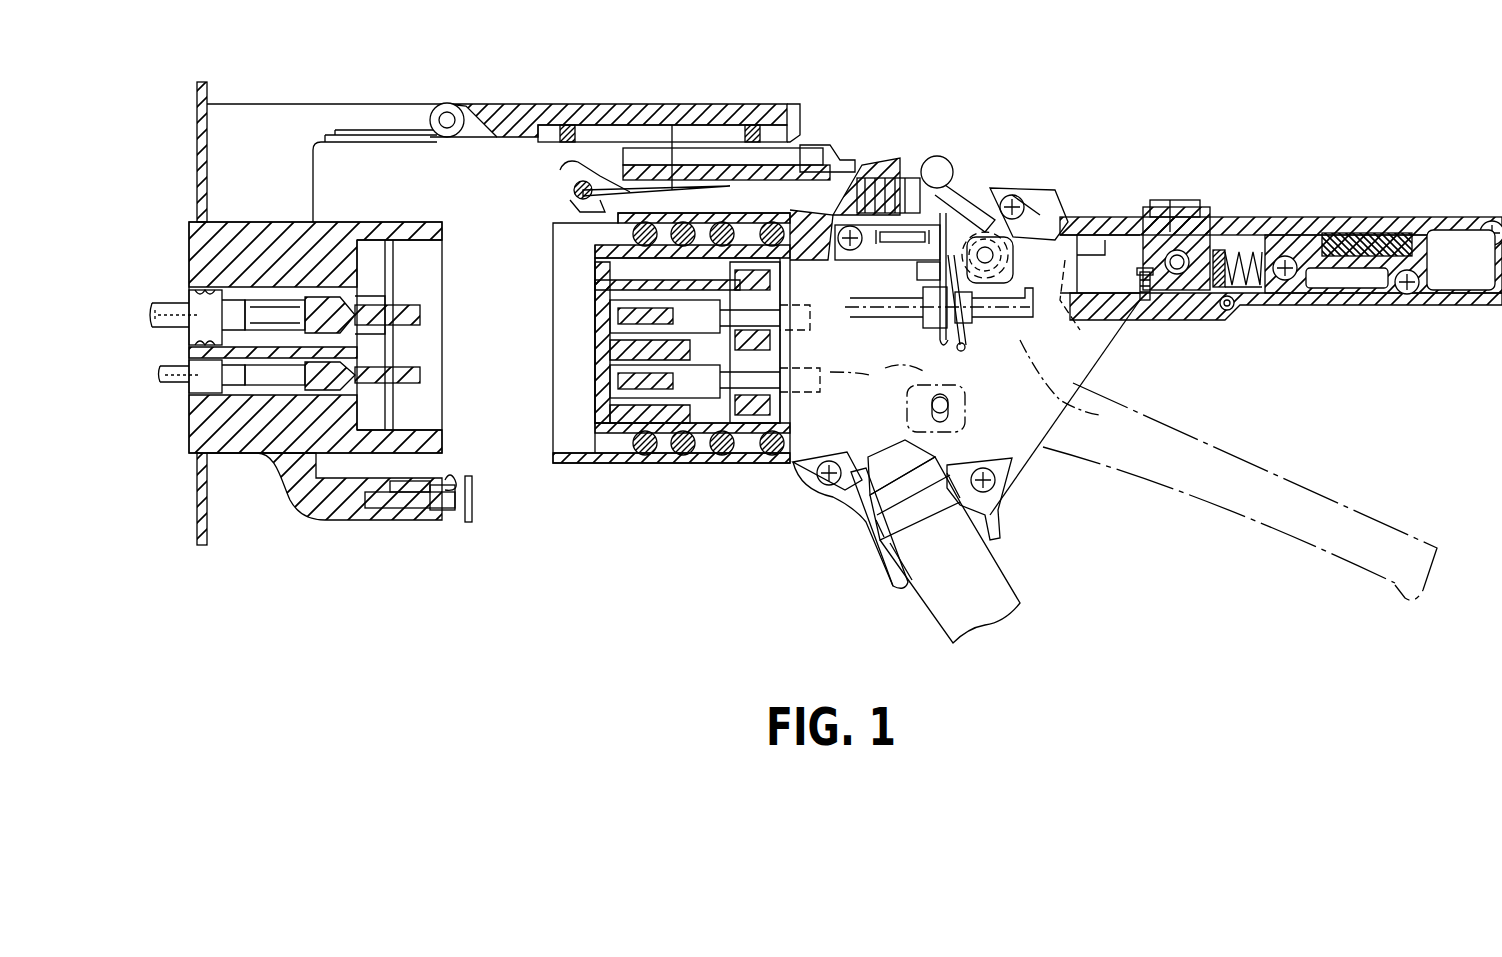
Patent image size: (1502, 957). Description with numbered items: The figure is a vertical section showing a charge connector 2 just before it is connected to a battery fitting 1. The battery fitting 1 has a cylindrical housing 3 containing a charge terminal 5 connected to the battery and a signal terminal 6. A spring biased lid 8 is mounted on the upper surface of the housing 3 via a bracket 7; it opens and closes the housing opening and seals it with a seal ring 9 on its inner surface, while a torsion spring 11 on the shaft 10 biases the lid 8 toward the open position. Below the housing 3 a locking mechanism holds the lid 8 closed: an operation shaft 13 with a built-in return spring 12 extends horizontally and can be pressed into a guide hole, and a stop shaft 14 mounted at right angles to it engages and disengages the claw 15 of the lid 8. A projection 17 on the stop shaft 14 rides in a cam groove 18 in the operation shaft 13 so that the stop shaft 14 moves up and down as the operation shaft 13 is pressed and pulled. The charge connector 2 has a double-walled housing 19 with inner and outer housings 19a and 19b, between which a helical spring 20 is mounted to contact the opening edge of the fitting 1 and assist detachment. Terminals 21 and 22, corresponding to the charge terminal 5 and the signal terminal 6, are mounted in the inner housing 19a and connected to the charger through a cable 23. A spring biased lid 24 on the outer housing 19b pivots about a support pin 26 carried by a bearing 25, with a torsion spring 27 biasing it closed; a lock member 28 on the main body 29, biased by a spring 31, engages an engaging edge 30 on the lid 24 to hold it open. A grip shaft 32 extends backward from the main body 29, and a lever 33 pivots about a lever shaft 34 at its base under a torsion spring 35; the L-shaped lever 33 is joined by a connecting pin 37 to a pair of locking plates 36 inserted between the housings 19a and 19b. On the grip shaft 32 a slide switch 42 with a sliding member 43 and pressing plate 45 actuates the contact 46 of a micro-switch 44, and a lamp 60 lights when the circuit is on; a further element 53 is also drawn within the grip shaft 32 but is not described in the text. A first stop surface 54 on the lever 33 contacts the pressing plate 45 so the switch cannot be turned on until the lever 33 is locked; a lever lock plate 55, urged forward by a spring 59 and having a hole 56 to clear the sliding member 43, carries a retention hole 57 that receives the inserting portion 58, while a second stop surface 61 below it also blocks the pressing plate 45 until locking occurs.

The battery fitting 1 is at (292, 527).
The charge connector 2 is at (690, 502).
The cylindrical housing 3 is at (238, 248).
The charge terminal 5 is at (405, 312).
The signal terminal 6 is at (398, 372).
The bracket 7 is at (260, 122).
The spring biased lid 8 is at (720, 108).
The seal ring 9 is at (562, 140).
The shaft 10 is at (447, 103).
The torsion spring 11 is at (382, 130).
The return spring 12 is at (400, 520).
The operation shaft 13 is at (472, 498).
The stop shaft 14 is at (450, 482).
The claw 15 is at (790, 140).
The projection 17 is at (442, 505).
The cam groove 18 is at (455, 512).
The housing 19 is at (565, 280).
The inner housing 19a is at (617, 442).
The outer housing 19b is at (652, 463).
The helical spring 20 is at (736, 460).
The terminal 21 is at (600, 318).
The terminal 22 is at (600, 380).
The cable 23 is at (943, 617).
The spring biased lid 24 is at (812, 150).
The bearing 25 is at (580, 213).
The support pin 26 is at (575, 182).
The torsion spring 27 is at (672, 190).
The lock member 28 is at (900, 150).
The main body 29 is at (1012, 195).
The engaging edge 30 is at (843, 150).
The spring 31 is at (905, 180).
The grip shaft 32 is at (1383, 300).
The lever 33 is at (1360, 550).
The lever shaft 34 is at (1040, 215).
The torsion spring 35 is at (985, 200).
The locking plates 36 is at (897, 329).
The connecting pin 37 is at (948, 405).
The slide switch 42 is at (1182, 208).
The sliding member 43 is at (1230, 310).
The micro-switch 44 is at (878, 326).
The pressing plate 45 is at (1120, 322).
The contact 46 is at (965, 320).
The spring 53 is at (1240, 232).
The first stop surface 54 is at (1095, 345).
The lever lock plate 55 is at (1283, 232).
The hole 56 is at (1100, 235).
The retention hole 57 is at (1090, 245).
The inserting portion 58 is at (1065, 228).
The spring 59 is at (1375, 232).
The lamp 60 is at (960, 180).
The second stop surface 61 is at (1065, 395).